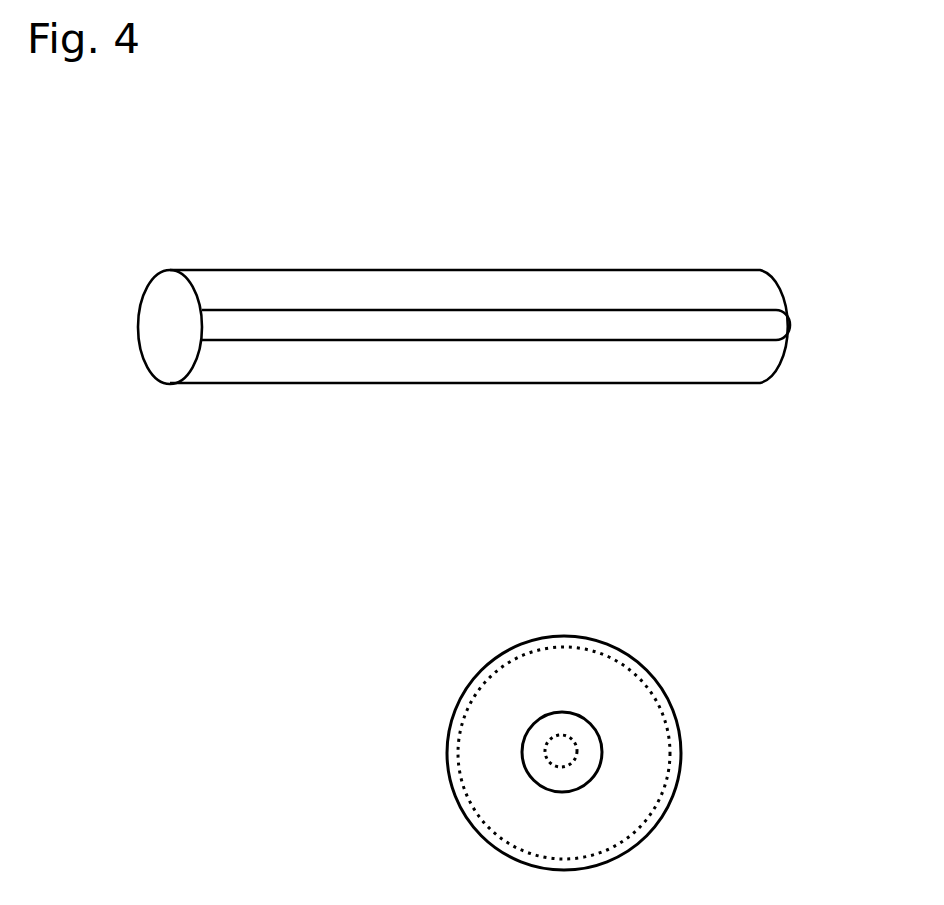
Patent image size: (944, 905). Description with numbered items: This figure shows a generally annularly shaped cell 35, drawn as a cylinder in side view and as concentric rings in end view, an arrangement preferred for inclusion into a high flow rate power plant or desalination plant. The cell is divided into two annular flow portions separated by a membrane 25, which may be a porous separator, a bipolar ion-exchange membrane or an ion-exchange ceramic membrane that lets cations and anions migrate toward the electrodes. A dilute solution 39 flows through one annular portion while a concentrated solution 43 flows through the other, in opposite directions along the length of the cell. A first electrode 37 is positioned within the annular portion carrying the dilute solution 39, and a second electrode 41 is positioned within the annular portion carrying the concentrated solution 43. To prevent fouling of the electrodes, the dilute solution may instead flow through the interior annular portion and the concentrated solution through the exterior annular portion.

The cell 35 is at (462, 196).
The dilute solution 39 is at (208, 295).
The concentrated solution 43 is at (758, 325).
The first electrode 37 is at (488, 673).
The membrane 25 is at (603, 750).
The second electrode 41 is at (572, 763).